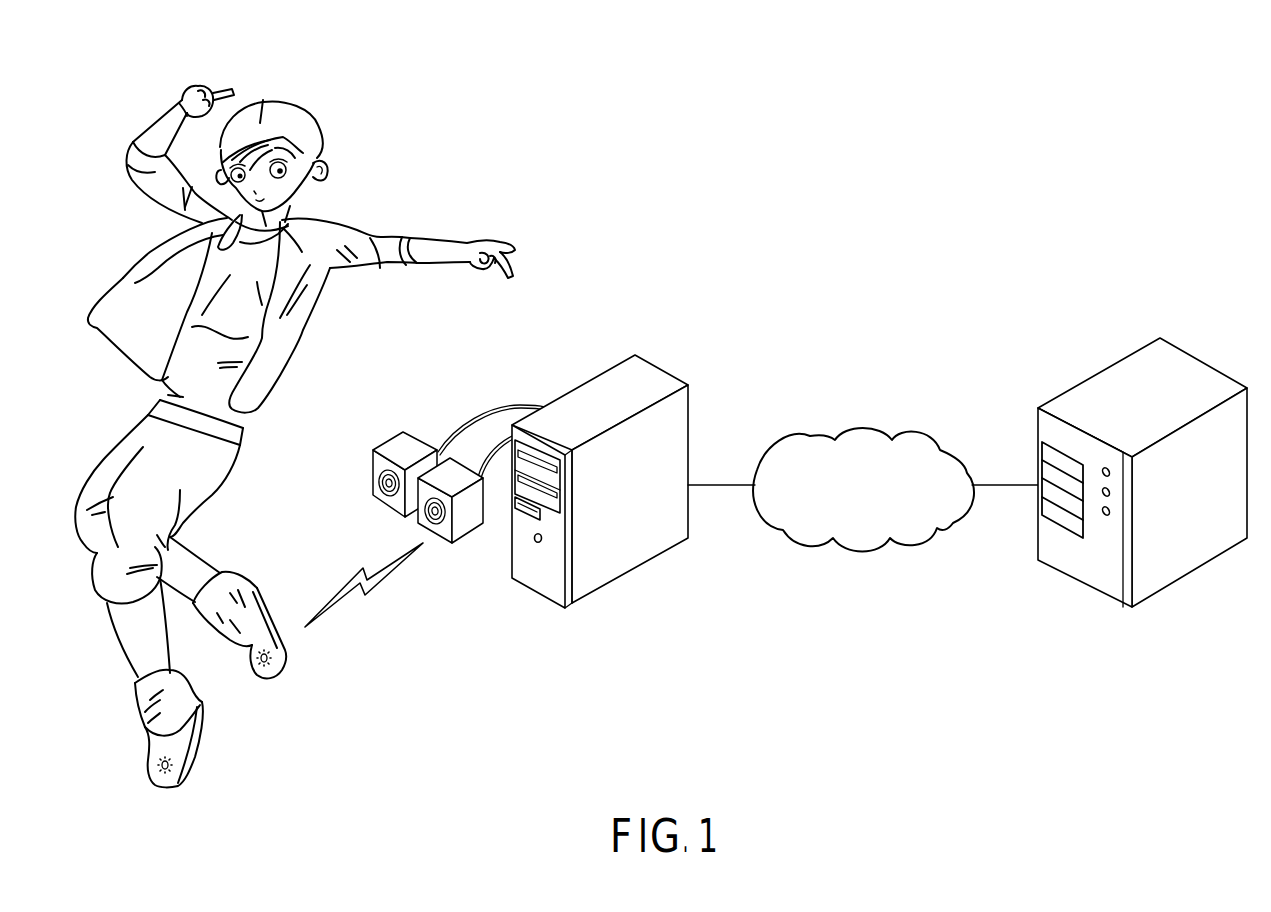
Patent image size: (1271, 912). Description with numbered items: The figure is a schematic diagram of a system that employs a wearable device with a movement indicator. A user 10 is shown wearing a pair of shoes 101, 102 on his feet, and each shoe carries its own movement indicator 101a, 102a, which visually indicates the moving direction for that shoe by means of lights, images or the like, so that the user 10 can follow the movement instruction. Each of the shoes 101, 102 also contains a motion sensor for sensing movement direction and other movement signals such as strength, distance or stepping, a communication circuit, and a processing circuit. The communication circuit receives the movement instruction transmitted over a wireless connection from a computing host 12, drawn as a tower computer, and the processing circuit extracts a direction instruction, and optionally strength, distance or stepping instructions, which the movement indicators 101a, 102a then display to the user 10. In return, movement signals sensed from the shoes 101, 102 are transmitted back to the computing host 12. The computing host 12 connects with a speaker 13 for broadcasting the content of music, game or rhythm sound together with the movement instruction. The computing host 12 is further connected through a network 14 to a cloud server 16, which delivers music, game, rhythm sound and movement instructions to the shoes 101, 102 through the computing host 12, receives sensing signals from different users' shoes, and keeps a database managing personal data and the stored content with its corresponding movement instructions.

The user 10 is at (263, 98).
The computing host 12 is at (603, 398).
The speaker 13 is at (413, 444).
The network 14 is at (863, 427).
The cloud server 16 is at (1122, 388).
The shoe 101 is at (167, 786).
The movement indicator 101a is at (172, 765).
The shoe 102 is at (269, 677).
The movement indicator 102a is at (270, 661).